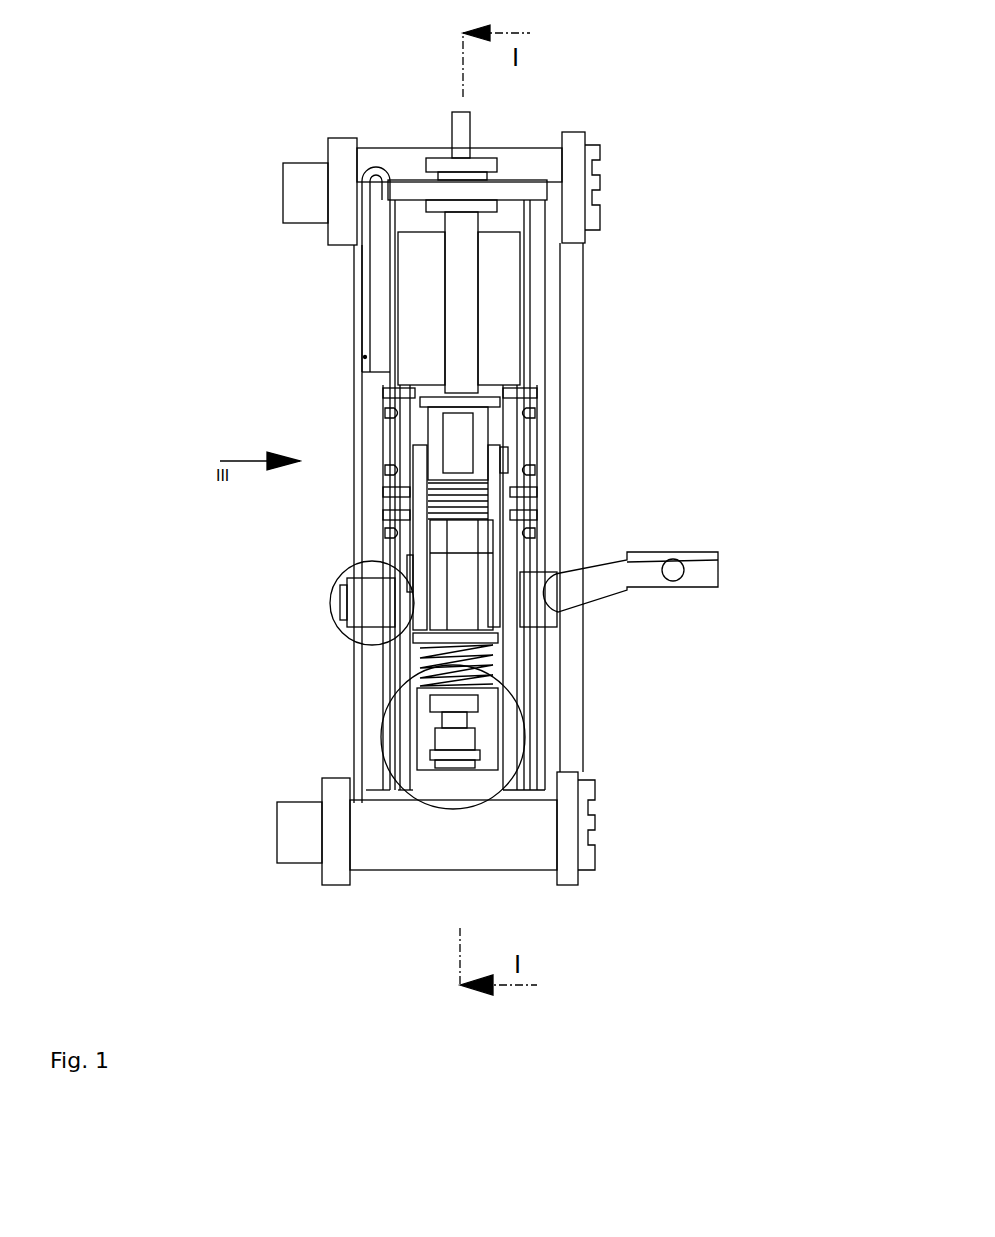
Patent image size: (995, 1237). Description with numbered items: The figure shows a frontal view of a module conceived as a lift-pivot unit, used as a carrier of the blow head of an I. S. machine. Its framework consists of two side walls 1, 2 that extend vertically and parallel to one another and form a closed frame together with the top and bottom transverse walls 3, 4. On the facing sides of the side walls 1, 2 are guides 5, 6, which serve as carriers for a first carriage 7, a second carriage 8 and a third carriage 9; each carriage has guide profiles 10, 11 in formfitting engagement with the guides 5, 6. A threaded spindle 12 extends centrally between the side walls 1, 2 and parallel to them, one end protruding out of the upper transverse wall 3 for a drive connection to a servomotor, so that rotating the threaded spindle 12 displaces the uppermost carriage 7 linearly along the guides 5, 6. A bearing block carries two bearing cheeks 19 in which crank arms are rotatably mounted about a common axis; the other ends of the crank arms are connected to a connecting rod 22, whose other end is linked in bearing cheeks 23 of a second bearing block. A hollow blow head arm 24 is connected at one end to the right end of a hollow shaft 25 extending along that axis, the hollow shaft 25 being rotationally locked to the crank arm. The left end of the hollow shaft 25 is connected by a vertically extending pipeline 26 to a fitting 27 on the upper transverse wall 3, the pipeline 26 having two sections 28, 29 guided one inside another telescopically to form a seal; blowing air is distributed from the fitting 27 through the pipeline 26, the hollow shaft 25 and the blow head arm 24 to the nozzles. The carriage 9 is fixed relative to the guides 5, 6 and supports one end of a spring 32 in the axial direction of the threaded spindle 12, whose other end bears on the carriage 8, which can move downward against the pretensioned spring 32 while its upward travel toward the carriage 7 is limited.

The side wall 1 is at (357, 670).
The side wall 2 is at (572, 673).
The top transverse wall 3 is at (530, 145).
The bottom transverse wall 4 is at (413, 873).
The guide 5 is at (382, 783).
The guide 6 is at (532, 313).
The first carriage 7 is at (513, 438).
The second carriage 8 is at (525, 548).
The third carriage 9 is at (523, 687).
The guide profile 10 is at (393, 432).
The guide profile 11 is at (523, 450).
The threaded spindle 12 is at (447, 128).
The bearing cheek 19 is at (437, 555).
The connecting rod 22 is at (405, 487).
The bearing cheek 23 is at (390, 397).
The blow head arm 24 is at (605, 592).
The hollow shaft 25 is at (362, 605).
The pipeline 26 is at (365, 357).
The fitting 27 is at (302, 160).
The pipeline section 28 is at (363, 282).
The pipeline section 29 is at (367, 450).
The spring 32 is at (520, 655).